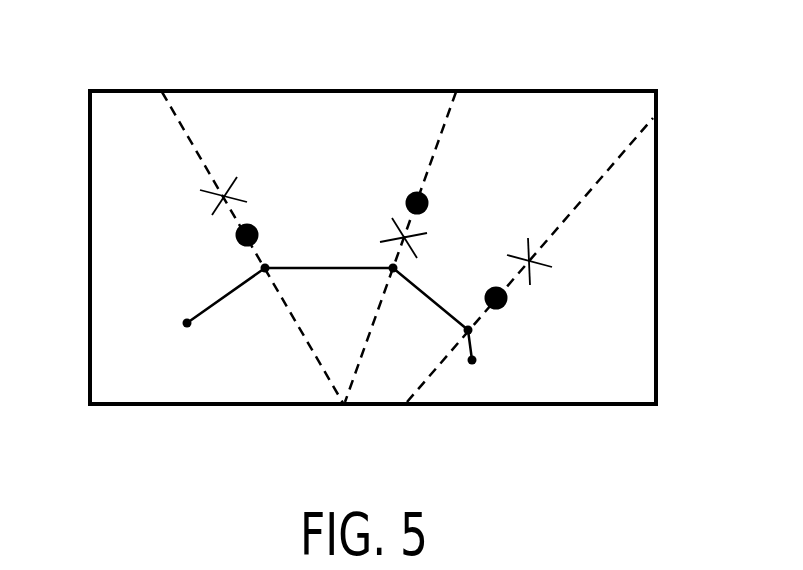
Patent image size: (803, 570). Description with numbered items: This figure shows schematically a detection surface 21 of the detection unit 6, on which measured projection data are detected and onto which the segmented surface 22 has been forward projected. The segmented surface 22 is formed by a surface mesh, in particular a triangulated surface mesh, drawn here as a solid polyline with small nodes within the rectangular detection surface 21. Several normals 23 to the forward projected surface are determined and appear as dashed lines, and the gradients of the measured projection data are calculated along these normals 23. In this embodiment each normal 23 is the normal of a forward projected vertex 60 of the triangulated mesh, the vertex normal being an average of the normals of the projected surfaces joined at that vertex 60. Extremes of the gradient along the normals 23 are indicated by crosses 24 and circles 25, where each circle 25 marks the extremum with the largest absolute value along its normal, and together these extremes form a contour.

The detection unit 6 is at (412, 207).
The detection surface 21 is at (658, 270).
The segmented surface 22 is at (213, 307).
The normals 23 is at (183, 152).
The crosses 24 is at (523, 250).
The circles 25 is at (508, 318).
The forward projected vertex 60 is at (268, 262).